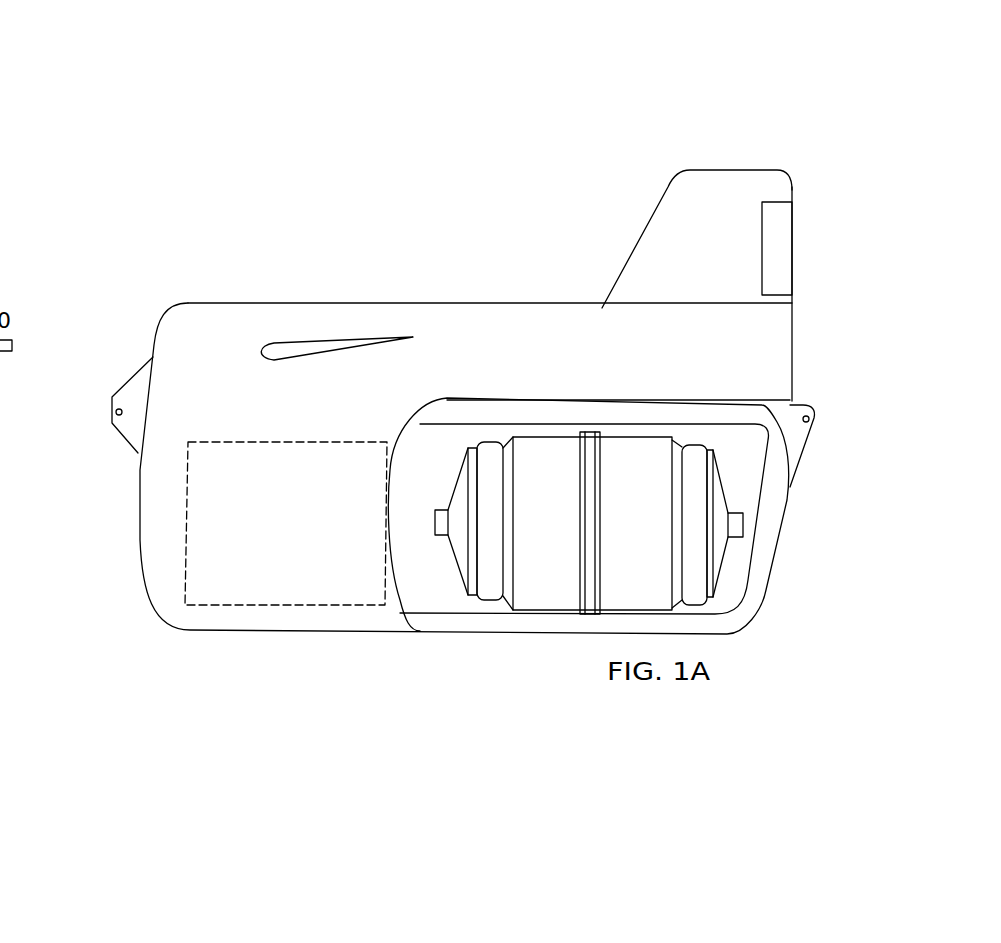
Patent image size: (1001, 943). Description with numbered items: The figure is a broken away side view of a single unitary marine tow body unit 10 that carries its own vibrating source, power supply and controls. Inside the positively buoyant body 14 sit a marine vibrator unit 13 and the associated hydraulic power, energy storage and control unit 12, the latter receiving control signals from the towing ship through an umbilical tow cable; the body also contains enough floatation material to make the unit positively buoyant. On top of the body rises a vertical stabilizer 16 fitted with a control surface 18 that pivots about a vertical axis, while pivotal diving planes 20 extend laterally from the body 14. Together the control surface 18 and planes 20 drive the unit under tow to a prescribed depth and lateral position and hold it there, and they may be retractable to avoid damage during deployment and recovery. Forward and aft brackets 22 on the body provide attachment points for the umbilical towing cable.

The marine tow body unit 10 is at (773, 572).
The hydraulic power, energy storage and control unit 12 is at (243, 612).
The marine vibrator unit 13 is at (538, 603).
The body 14 is at (795, 380).
The vertical stabilizer 16 is at (647, 143).
The control surface 18 is at (555, 217).
The pivotal diving planes 20 is at (415, 243).
The forward and aft brackets 22 is at (107, 410).